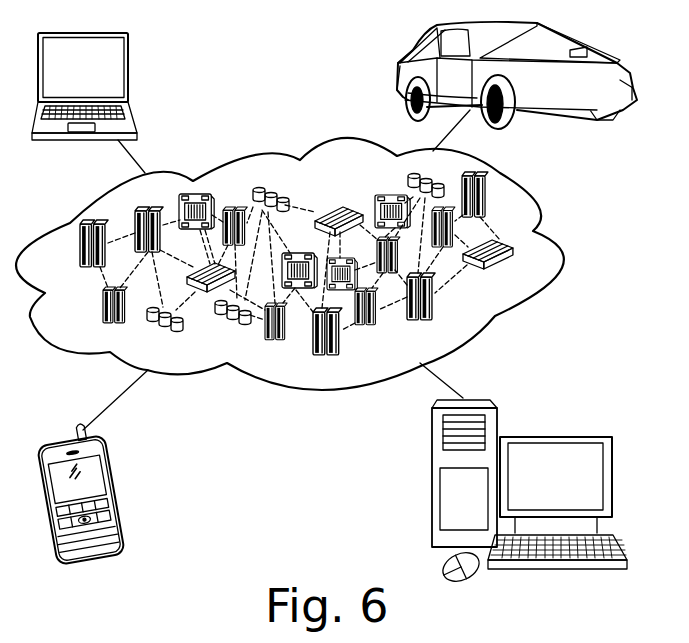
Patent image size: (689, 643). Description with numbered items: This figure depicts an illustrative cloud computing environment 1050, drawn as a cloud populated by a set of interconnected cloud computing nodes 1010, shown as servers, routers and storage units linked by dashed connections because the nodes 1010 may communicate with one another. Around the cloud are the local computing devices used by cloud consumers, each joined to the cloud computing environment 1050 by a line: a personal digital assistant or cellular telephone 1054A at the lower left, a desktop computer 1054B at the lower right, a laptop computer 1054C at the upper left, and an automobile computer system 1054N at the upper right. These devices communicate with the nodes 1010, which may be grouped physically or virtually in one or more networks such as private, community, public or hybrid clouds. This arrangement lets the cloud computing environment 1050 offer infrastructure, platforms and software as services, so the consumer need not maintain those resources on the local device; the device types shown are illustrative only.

The cloud computing nodes 1010 is at (541, 266).
The cloud computing environment 1050 is at (542, 205).
The personal digital assistant or cellular telephone 1054A is at (117, 495).
The desktop computer 1054B is at (555, 437).
The laptop computer 1054C is at (128, 60).
The automobile computer system 1054N is at (398, 73).